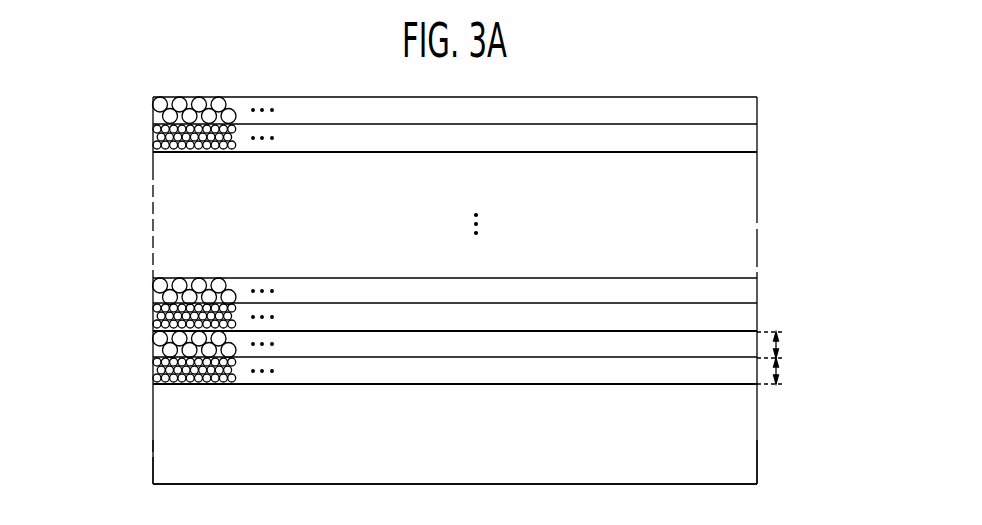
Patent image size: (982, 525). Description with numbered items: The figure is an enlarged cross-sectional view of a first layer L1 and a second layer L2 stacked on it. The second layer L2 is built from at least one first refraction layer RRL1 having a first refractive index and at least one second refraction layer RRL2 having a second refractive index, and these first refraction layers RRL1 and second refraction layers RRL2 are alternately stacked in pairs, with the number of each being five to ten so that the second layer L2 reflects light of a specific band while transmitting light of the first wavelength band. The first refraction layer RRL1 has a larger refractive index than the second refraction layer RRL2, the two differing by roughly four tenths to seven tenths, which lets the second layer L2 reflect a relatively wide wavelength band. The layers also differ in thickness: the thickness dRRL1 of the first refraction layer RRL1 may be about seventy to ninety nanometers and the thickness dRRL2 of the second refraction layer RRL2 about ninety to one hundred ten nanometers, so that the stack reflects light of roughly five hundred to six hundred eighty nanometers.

The first layer L1 is at (160, 432).
The second layer L2 is at (57, 398).
The first refraction layer RRL1 is at (153, 140).
The second refraction layer RRL2 is at (153, 113).
The thickness of the first refraction layer dRRL1 is at (781, 373).
The thickness of the second refraction layer dRRL2 is at (781, 344).